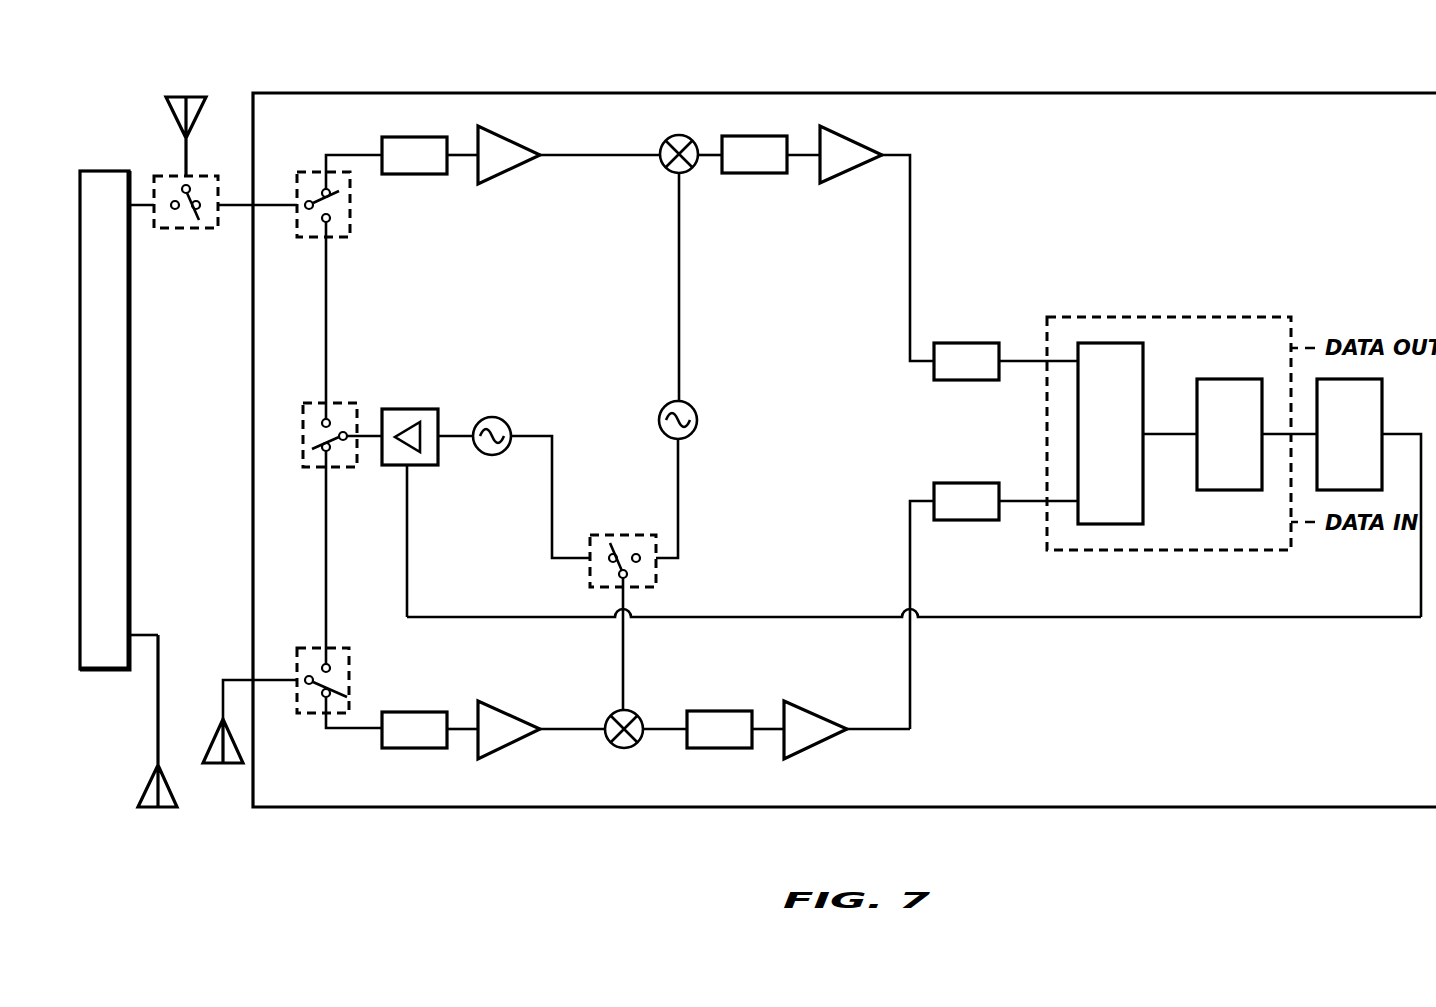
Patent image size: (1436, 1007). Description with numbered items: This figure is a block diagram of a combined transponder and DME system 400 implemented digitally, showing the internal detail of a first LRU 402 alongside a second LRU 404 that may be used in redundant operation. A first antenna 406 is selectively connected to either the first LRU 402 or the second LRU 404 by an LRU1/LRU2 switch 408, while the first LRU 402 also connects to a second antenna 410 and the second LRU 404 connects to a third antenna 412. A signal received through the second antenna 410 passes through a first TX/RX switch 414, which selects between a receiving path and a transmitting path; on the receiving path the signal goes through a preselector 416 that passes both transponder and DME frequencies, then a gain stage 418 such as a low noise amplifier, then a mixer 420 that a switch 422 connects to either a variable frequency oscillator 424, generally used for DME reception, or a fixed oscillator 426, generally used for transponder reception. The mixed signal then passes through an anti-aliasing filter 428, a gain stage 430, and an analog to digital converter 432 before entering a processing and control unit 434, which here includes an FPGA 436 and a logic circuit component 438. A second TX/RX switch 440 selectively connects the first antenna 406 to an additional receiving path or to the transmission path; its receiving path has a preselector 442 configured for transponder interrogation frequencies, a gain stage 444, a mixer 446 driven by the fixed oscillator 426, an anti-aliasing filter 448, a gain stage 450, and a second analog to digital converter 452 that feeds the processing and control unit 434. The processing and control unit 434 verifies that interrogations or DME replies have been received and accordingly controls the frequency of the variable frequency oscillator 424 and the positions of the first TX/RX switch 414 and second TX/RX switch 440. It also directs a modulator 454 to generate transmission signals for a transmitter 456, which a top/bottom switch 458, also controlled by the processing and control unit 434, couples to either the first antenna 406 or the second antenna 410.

The combined transponder and DME system 400 is at (167, 49).
The first LRU 402 is at (327, 807).
The second LRU 404 is at (125, 420).
The first antenna 406 is at (178, 120).
The LRU1/LRU2 switch 408 is at (175, 237).
The second antenna 410 is at (218, 742).
The third antenna 412 is at (146, 789).
The first TX/RX switch 414 is at (362, 661).
The preselector 416 is at (433, 741).
The gain stage 418 is at (510, 739).
The mixer 420 is at (612, 740).
The switch 422 is at (667, 583).
The variable frequency oscillator 424 is at (507, 421).
The fixed oscillator 426 is at (698, 426).
The anti-aliasing filter 428 is at (738, 741).
The gain stage 430 is at (816, 739).
The analog to digital converter 432 is at (985, 512).
The processing and control unit 434 is at (1272, 352).
The FPGA 436 is at (1128, 445).
The logic circuit component 438 is at (1247, 445).
The second TX/RX switch 440 is at (352, 220).
The preselector 442 is at (433, 166).
The gain stage 444 is at (510, 165).
The mixer 446 is at (668, 144).
The anti-aliasing filter 448 is at (773, 166).
The gain stage 450 is at (851, 165).
The second analog to digital converter 452 is at (985, 372).
The modulator 454 is at (1367, 445).
The transmitter 456 is at (428, 407).
The top/bottom switch 458 is at (339, 401).